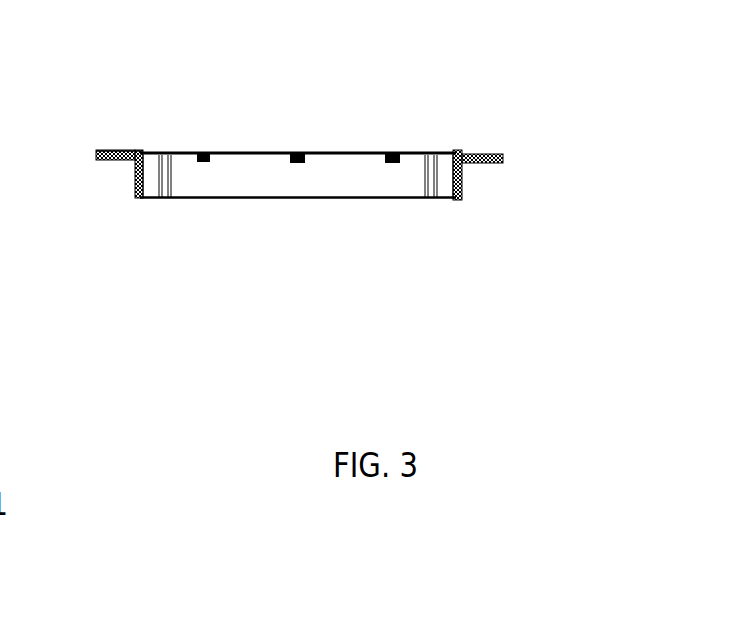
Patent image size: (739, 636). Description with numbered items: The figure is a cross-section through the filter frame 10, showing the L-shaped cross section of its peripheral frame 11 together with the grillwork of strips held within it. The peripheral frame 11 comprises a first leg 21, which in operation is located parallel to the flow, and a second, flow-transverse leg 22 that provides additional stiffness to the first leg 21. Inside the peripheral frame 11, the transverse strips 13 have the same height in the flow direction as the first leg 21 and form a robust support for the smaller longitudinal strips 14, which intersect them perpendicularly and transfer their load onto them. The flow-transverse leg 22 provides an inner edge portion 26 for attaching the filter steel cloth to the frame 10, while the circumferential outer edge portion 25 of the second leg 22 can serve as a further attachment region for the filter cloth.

The frame 10 is at (479, 151).
The peripheral frame 11 is at (134, 196).
The transverse strips 13 is at (192, 178).
The longitudinal strips 14 is at (390, 163).
The first leg 21 is at (138, 192).
The second leg 22 is at (115, 163).
The circumferential outer edge portion 25 is at (105, 151).
The inner edge portion 26 is at (138, 152).